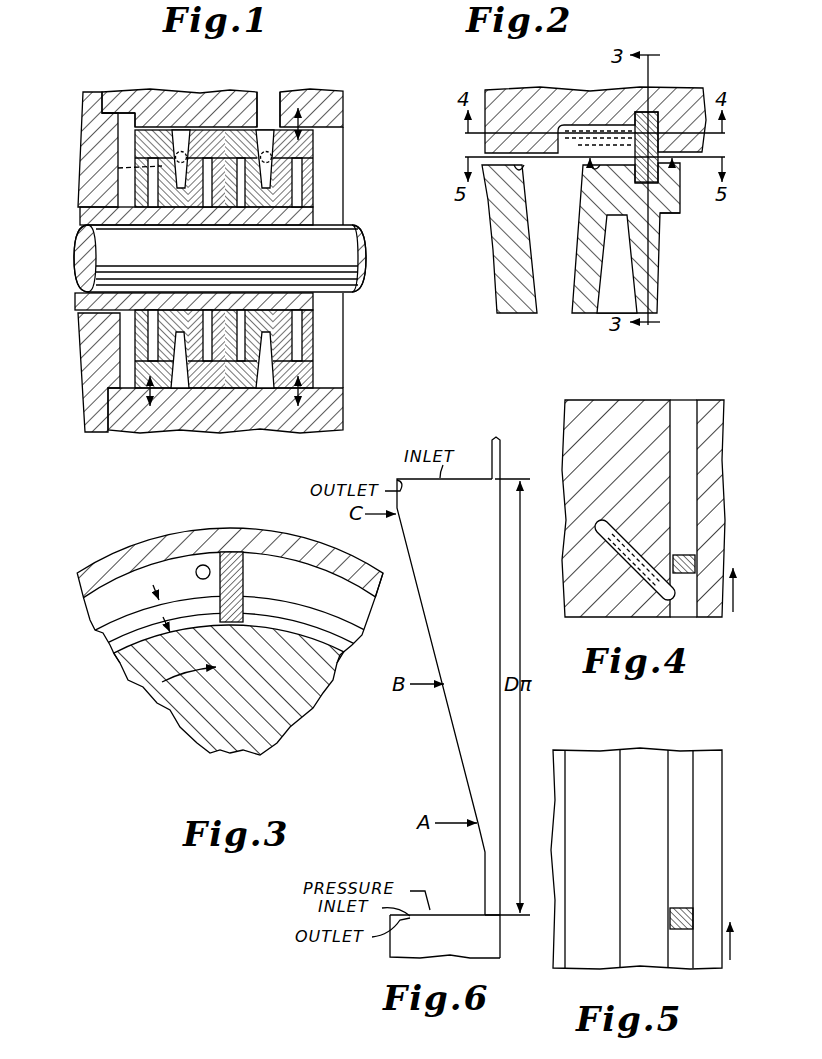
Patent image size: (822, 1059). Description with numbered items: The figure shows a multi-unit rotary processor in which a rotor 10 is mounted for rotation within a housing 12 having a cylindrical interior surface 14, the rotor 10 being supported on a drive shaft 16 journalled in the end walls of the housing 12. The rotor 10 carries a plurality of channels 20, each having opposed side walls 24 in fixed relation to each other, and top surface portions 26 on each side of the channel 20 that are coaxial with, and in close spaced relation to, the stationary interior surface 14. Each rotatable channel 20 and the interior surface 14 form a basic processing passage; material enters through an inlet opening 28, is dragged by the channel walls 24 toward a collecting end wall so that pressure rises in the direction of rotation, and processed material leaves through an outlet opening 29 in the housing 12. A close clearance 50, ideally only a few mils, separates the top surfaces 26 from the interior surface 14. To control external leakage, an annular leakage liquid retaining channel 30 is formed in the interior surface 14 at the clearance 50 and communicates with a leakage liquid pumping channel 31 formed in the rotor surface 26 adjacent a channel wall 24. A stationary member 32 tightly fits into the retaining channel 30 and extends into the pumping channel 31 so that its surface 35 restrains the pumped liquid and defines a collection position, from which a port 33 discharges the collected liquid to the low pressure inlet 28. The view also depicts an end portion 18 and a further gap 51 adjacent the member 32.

In FIG. 1, the rotor 10 is at (316, 191).
In FIG. 1, the housing 12 is at (133, 95).
In FIG. 2, the housing 12 is at (556, 97).
In FIG. 4, the housing 12 is at (606, 408).
In FIG. 1, the cylindrical interior surface 14 is at (118, 148).
In FIG. 2, the cylindrical interior surface 14 is at (690, 160).
In FIG. 3, the cylindrical interior surface 14 is at (328, 627).
In FIG. 1, the drive shaft 16 is at (95, 252).
In FIG. 1, the end housing 18 is at (92, 346).
In FIG. 1, the channel 20 is at (179, 384).
In FIG. 2, the channel 20 is at (588, 264).
In FIG. 1, the side wall 24 is at (181, 148).
In FIG. 2, the side wall 24 is at (577, 215).
In FIG. 5, the side wall 24 is at (615, 904).
In FIG. 1, the top surface portion 26 is at (125, 130).
In FIG. 2, the top surface portion 26 is at (527, 196).
In FIG. 3, the top surface portion 26 is at (344, 646).
In FIG. 5, the top surface portion 26 is at (635, 849).
In FIG. 1, the inlet opening 28 is at (273, 103).
In FIG. 1, the outlet opening 29 is at (316, 152).
In FIG. 2, the leakage liquid retaining channel 30 is at (659, 137).
In FIG. 3, the leakage liquid retaining channel 30 is at (152, 570).
In FIG. 4, the leakage liquid retaining channel 30 is at (689, 410).
In FIG. 2, the leakage liquid pumping channel 31 is at (662, 207).
In FIG. 3, the leakage liquid pumping channel 31 is at (141, 641).
In FIG. 5, the leakage liquid pumping channel 31 is at (681, 762).
In FIG. 2, the stationary member 32 is at (662, 118).
In FIG. 3, the stationary member 32 is at (246, 556).
In FIG. 4, the stationary member 32 is at (694, 556).
In FIG. 5, the stationary member 32 is at (692, 910).
In FIG. 2, the port 33 is at (600, 131).
In FIG. 3, the port 33 is at (203, 565).
In FIG. 4, the port 33 is at (638, 548).
In FIG. 3, the surface of member 35 is at (219, 580).
In FIG. 4, the surface of member 35 is at (696, 586).
In FIG. 5, the surface of member 35 is at (691, 930).
In FIG. 1, the clearance 50 is at (300, 128).
In FIG. 2, the clearance 50 is at (592, 165).
In FIG. 3, the clearance 50 is at (160, 609).
In FIG. 2, the clearance 51 is at (681, 180).